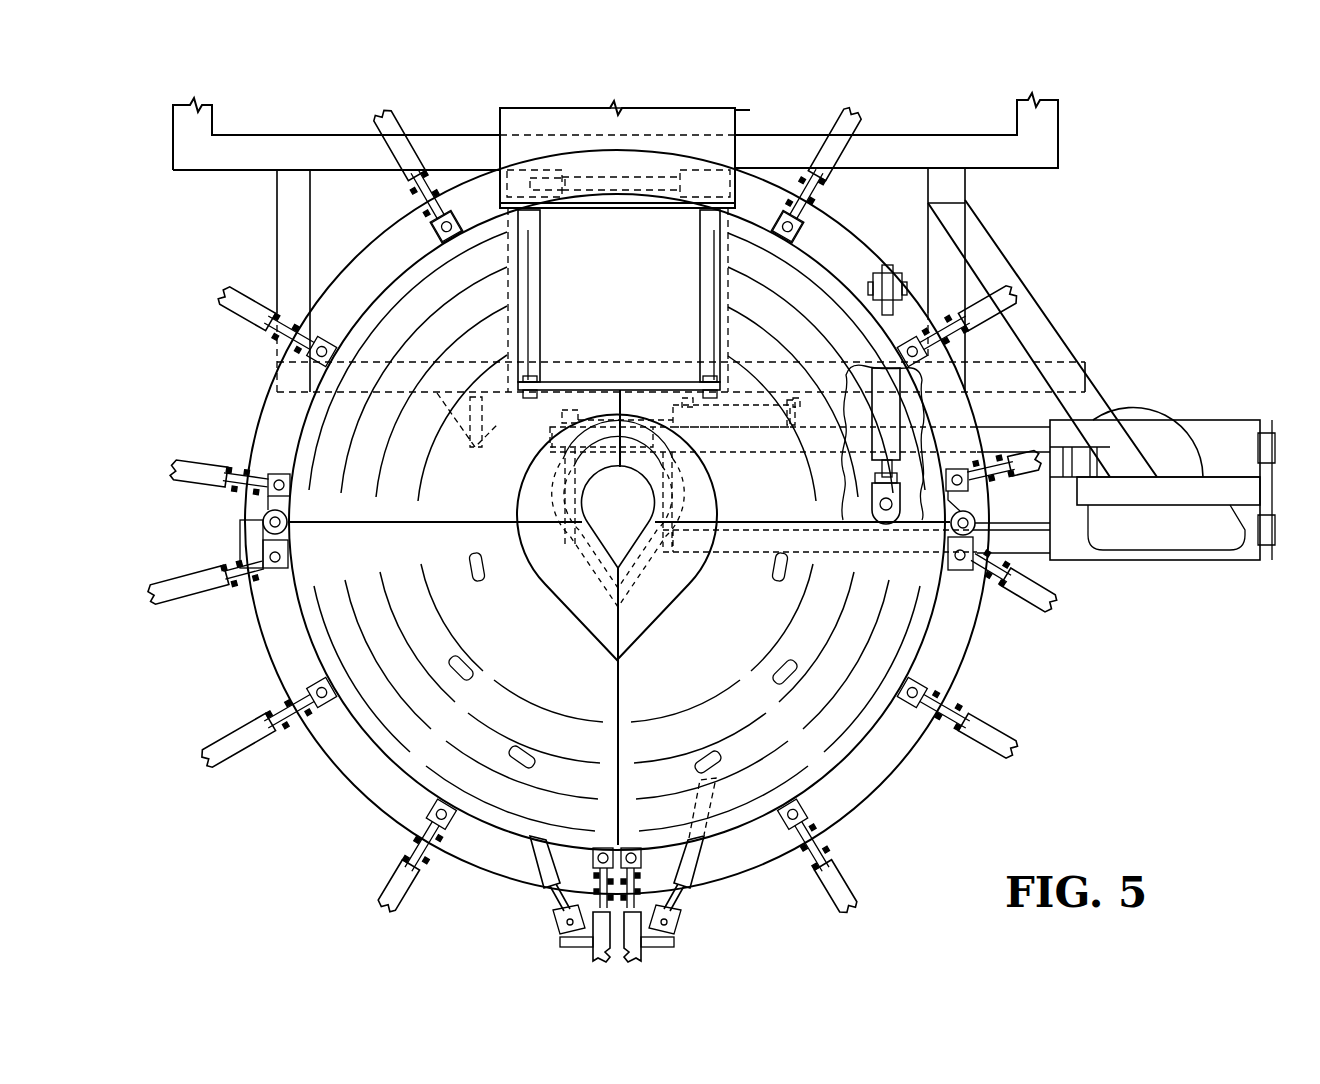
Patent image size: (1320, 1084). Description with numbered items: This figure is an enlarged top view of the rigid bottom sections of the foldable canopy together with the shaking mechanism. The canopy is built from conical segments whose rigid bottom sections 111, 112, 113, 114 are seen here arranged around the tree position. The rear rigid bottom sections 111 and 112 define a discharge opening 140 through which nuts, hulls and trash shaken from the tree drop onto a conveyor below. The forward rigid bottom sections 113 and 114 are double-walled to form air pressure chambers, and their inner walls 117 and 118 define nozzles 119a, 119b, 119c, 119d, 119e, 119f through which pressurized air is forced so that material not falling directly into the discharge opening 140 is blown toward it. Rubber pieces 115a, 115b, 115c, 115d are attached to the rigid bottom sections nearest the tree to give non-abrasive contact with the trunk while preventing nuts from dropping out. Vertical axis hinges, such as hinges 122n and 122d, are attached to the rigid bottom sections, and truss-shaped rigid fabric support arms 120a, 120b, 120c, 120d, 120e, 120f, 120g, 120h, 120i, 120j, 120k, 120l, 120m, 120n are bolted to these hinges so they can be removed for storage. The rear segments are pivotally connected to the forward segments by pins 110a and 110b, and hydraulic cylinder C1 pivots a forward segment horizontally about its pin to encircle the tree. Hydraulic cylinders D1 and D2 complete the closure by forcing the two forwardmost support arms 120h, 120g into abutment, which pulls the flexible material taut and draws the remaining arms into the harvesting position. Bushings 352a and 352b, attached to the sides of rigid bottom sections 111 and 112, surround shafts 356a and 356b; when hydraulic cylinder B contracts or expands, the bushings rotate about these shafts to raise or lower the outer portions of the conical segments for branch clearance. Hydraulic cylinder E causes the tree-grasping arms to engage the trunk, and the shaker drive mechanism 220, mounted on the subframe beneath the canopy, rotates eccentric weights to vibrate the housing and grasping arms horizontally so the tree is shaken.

The rigid bottom section 111 is at (826, 300).
The rigid bottom section 112 is at (393, 340).
The forward rigid bottom section 113 is at (300, 643).
The forward rigid bottom section 114 is at (848, 765).
The rubber piece 115a is at (700, 498).
The rubber piece 115b is at (688, 570).
The rubber piece 115c is at (590, 610).
The rubber piece 115d is at (537, 500).
The inner wall 117 is at (412, 717).
The inner wall 118 is at (862, 703).
The nozzle 119a is at (788, 572).
The nozzle 119b is at (770, 672).
The nozzle 119c is at (690, 765).
The nozzle 119d is at (538, 757).
The nozzle 119e is at (478, 676).
The nozzle 119f is at (463, 572).
The rigid fabric support arm 120a is at (828, 177).
The rigid fabric support arm 120b is at (983, 316).
The rigid fabric support arm 120c is at (1030, 470).
The rigid fabric support arm 120d is at (1045, 600).
The rigid fabric support arm 120e is at (1002, 735).
The rigid fabric support arm 120f is at (840, 887).
The forwardmost rigid support arm 120g is at (641, 949).
The forwardmost rigid support arm 120h is at (593, 949).
The rigid fabric support arm 120i is at (398, 886).
The rigid fabric support arm 120j is at (238, 742).
The rigid fabric support arm 120k is at (192, 598).
The rigid fabric support arm 120l is at (188, 470).
The rigid fabric support arm 120m is at (248, 315).
The rigid fabric support arm 120n is at (414, 178).
The vertical axis hinge 122n is at (440, 238).
The vertical axis hinge 122d is at (798, 236).
The pin 110a is at (953, 530).
The pin 110b is at (262, 520).
The discharge opening 140 is at (640, 316).
The bushing 352a is at (712, 276).
The bushing 352b is at (533, 266).
The shaft 356a is at (700, 380).
The shaft 356b is at (538, 380).
The hydraulic cylinder B is at (633, 209).
The hydraulic cylinder C1 is at (900, 406).
The hydraulic cylinder D1 is at (698, 851).
The hydraulic cylinder D2 is at (540, 851).
The hydraulic cylinder E is at (800, 446).
The shaker drive mechanism 220 is at (1180, 572).